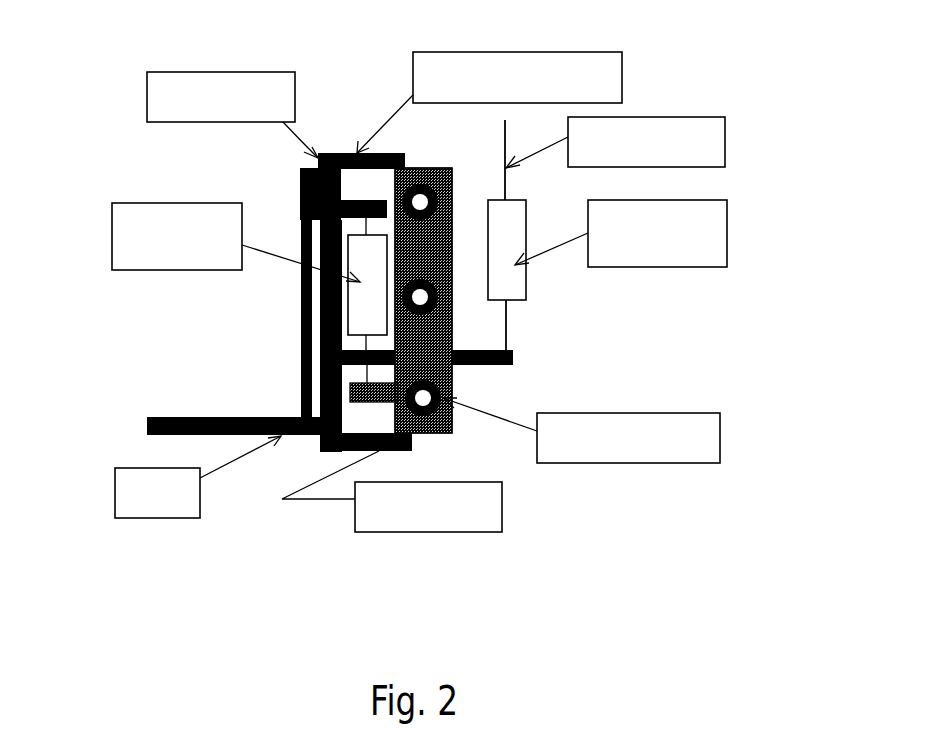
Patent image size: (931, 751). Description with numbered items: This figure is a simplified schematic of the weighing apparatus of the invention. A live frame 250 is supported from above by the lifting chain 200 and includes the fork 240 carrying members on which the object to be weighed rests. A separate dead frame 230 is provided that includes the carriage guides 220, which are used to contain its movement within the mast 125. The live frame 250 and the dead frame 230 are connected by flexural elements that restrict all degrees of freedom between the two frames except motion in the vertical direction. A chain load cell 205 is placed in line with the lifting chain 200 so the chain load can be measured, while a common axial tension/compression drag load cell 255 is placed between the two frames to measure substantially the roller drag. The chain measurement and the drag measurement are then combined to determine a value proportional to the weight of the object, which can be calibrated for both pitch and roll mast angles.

The mast 125 is at (329, 98).
The live frame 250 is at (147, 97).
The drag load cell 255 is at (112, 237).
The fork 240 is at (115, 493).
The lifting chain 200 is at (725, 141).
The chain load cell 205 is at (727, 230).
The carriage guides 220 is at (720, 438).
The dead frame 230 is at (502, 505).